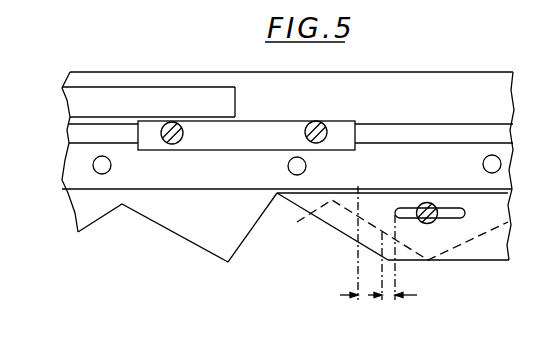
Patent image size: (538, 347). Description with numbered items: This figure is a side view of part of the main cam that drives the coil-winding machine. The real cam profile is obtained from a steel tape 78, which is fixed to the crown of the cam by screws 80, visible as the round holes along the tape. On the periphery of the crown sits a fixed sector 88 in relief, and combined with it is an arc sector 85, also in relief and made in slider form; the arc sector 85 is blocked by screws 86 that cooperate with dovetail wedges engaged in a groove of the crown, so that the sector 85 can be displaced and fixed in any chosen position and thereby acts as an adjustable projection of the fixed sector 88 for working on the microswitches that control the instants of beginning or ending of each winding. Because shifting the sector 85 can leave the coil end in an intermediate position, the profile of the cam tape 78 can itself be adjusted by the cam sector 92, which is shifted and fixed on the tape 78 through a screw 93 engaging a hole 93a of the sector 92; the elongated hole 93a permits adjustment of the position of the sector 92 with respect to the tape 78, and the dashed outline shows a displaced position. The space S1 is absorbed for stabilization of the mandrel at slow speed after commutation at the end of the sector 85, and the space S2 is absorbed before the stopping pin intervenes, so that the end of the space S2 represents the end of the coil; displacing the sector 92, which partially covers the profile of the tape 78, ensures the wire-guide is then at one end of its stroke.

The steel tape 78 is at (83, 205).
The screws 80 is at (133, 205).
The arc sector 85 is at (258, 127).
The screws 86 is at (330, 125).
The fixed sector 88 is at (143, 100).
The cam sector 92 is at (356, 229).
The screw 93 is at (431, 224).
The hole 93a is at (450, 217).
The space S1 is at (365, 243).
The space S2 is at (409, 257).